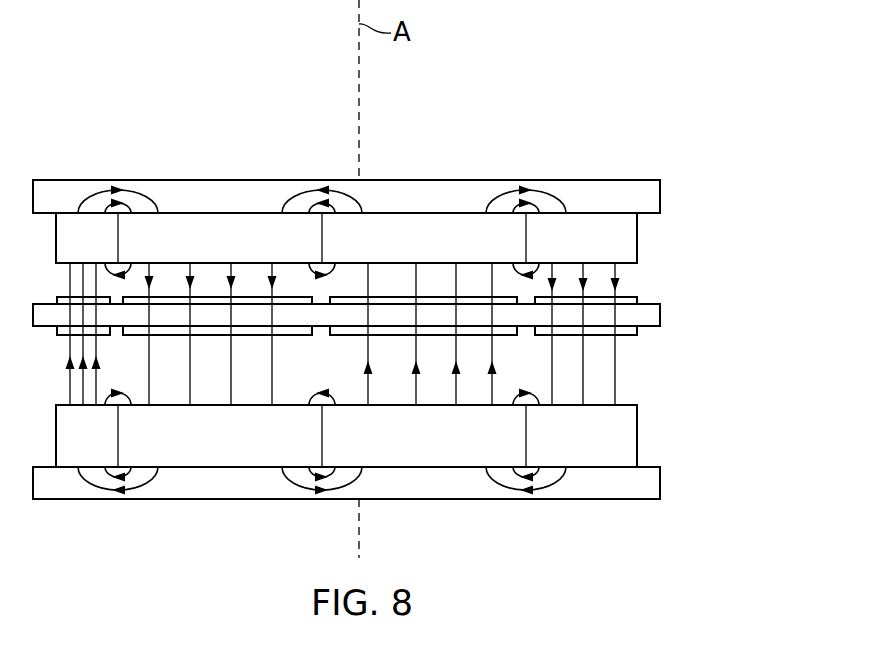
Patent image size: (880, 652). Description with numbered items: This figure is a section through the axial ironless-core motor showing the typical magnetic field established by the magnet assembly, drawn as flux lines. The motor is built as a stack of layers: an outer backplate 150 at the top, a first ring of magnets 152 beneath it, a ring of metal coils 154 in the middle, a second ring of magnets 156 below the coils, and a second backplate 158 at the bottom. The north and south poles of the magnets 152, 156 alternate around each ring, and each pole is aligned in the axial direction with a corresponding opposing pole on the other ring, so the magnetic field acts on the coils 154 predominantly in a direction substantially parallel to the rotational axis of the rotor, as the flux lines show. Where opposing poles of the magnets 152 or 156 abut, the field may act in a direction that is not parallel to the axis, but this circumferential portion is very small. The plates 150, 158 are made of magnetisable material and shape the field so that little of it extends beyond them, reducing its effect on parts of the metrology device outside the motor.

The backplate 150 is at (660, 197).
The ring of magnets 152 is at (637, 228).
The ring of metal coils 154 is at (660, 317).
The ring of magnets 156 is at (637, 431).
The backplate 158 is at (660, 482).